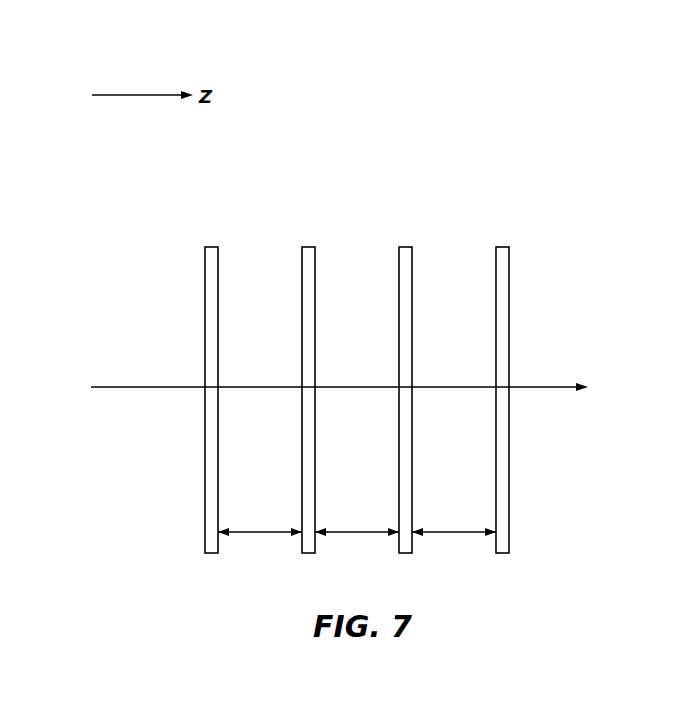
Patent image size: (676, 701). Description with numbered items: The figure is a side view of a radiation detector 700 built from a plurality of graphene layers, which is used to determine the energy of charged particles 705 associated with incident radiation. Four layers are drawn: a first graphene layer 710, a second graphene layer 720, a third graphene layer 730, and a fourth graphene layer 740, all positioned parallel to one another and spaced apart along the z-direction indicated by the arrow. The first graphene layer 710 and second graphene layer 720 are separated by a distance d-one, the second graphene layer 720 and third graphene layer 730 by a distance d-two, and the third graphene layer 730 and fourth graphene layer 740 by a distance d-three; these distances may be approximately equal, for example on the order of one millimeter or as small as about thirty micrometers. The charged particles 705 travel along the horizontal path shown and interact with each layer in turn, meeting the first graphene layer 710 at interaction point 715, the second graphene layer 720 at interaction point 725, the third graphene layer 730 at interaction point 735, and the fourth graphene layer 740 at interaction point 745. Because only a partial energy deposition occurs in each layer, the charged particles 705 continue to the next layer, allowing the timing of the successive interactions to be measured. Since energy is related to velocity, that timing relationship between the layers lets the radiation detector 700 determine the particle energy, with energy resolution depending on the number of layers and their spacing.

The radiation detector 700 is at (516, 100).
The charged particles 705 is at (120, 385).
The first graphene layer 710 is at (214, 246).
The interaction point 715 is at (205, 388).
The second graphene layer 720 is at (311, 246).
The interaction point 725 is at (302, 388).
The third graphene layer 730 is at (408, 246).
The interaction point 735 is at (399, 388).
The fourth graphene layer 740 is at (506, 246).
The interaction point 745 is at (496, 388).